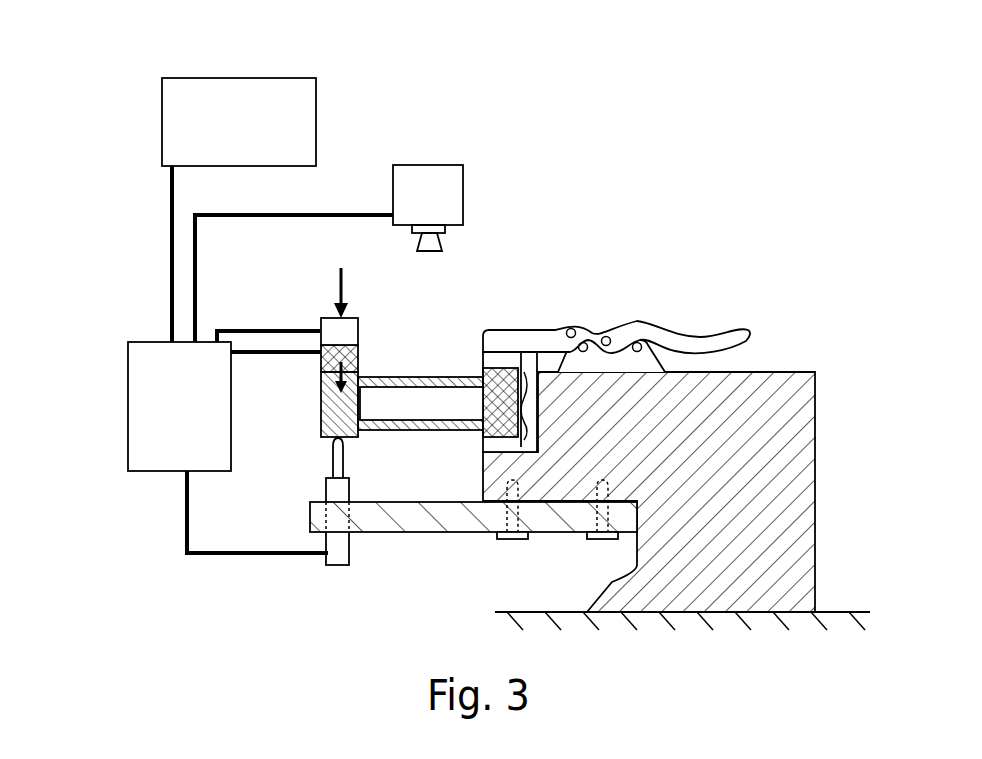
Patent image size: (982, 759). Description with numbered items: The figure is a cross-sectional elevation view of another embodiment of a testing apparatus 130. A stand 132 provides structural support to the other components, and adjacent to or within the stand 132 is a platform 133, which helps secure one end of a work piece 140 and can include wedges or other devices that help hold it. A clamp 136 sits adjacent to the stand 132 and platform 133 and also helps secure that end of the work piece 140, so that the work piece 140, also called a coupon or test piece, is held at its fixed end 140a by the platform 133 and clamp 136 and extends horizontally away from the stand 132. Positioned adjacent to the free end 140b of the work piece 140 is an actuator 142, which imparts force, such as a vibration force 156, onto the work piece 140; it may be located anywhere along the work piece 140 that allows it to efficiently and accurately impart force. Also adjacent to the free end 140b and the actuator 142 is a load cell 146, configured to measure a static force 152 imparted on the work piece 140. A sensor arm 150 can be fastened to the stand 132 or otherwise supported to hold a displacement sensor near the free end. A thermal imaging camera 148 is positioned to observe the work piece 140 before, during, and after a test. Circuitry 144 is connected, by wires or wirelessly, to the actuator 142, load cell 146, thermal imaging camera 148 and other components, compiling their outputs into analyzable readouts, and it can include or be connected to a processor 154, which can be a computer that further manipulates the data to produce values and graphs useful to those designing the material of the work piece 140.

The testing apparatus 130 is at (660, 146).
The stand 132 is at (797, 372).
The platform 133 is at (483, 444).
The clamp 136 is at (607, 320).
The work piece 140 is at (410, 378).
The fixed end 140a is at (490, 385).
The free end 140b is at (325, 417).
The actuator 142 is at (320, 362).
The circuitry 144 is at (138, 365).
The load cell 146 is at (321, 320).
The thermal imaging camera 148 is at (418, 172).
The sensor arm 150 is at (450, 526).
The static force 152 is at (338, 282).
The processor 154 is at (215, 87).
The vibration force 156 is at (362, 363).